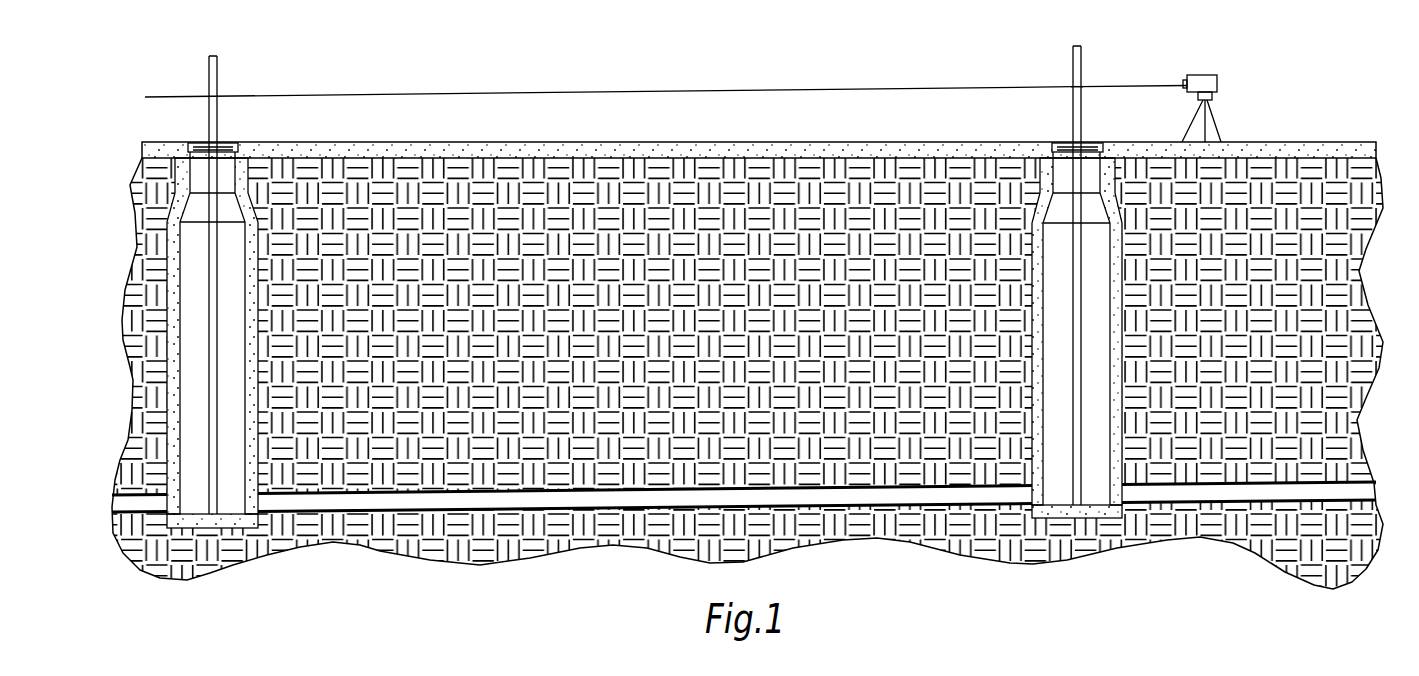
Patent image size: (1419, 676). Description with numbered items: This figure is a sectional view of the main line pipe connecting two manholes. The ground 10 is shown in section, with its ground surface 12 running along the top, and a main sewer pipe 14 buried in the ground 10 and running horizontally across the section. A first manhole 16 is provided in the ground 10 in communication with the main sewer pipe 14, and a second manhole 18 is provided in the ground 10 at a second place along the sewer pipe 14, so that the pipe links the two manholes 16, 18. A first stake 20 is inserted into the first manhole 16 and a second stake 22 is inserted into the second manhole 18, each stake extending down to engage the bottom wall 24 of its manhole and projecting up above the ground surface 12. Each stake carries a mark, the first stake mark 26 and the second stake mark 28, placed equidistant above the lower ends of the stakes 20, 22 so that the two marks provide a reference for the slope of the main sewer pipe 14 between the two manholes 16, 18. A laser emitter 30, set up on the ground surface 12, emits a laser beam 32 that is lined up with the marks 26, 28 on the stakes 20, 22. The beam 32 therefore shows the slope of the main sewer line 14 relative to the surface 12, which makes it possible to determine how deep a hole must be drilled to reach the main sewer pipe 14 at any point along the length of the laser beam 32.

The ground 10 is at (836, 190).
The ground surface 12 is at (748, 141).
The main sewer pipe 14 is at (550, 503).
The first manhole 16 is at (1087, 177).
The second manhole 18 is at (227, 172).
The first stake 20 is at (1078, 46).
The second stake 22 is at (211, 56).
The bottom wall 24 is at (233, 512).
The first stake mark 26 is at (1072, 85).
The second stake mark 28 is at (218, 97).
The laser emitter 30 is at (1200, 77).
The laser beam 32 is at (1128, 85).